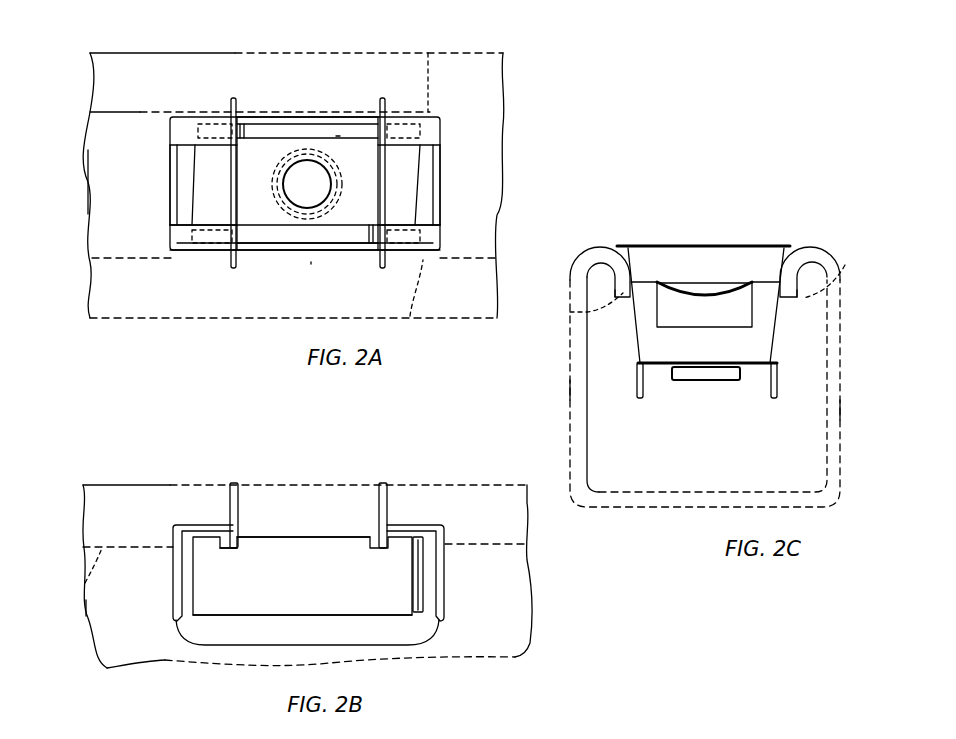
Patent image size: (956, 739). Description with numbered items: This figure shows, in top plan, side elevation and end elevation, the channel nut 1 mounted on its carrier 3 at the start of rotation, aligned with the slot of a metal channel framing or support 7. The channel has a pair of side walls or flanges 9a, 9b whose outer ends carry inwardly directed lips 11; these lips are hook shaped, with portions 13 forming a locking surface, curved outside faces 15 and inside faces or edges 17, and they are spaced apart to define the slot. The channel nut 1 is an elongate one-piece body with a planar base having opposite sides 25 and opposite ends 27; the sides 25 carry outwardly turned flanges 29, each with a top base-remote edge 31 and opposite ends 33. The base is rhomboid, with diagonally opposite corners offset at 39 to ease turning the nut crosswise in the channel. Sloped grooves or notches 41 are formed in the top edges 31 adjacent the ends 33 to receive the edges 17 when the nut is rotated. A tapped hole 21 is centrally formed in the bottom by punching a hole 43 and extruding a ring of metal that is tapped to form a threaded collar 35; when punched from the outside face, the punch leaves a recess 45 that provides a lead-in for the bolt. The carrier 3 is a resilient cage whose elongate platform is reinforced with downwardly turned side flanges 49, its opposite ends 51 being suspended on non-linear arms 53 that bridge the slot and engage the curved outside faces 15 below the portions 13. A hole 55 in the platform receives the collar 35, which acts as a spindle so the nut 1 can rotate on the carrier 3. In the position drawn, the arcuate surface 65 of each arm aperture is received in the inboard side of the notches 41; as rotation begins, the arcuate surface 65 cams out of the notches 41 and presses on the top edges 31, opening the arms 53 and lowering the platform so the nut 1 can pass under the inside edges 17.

In FIG. 2B, the channel nut 1 is at (341, 565).
In FIG. 2A, the carrier 3 is at (309, 187).
In FIG. 2C, the carrier 3 is at (658, 316).
In FIG. 2B, the carrier 3 is at (313, 627).
In FIG. 2A, the metal channel framing 7 is at (86, 182).
In FIG. 2C, the metal channel framing 7 is at (691, 338).
In FIG. 2B, the metal channel framing 7 is at (86, 618).
In FIG. 2C, the channel side wall 9a is at (570, 393).
In FIG. 2C, the channel side wall 9b is at (842, 417).
In FIG. 2A, the inwardly directed lip 11 is at (88, 80).
In FIG. 2C, the inwardly directed lip 11 is at (629, 251).
In FIG. 2B, the inwardly directed lip 11 is at (78, 529).
In FIG. 2C, the lip portion 13 is at (588, 243).
In FIG. 2C, the curved outside face 15 is at (622, 242).
In FIG. 2C, the inside edge 17 is at (570, 312).
In FIG. 2B, the inside edge 17 is at (85, 583).
In FIG. 2A, the tapped hole 21 is at (300, 208).
In FIG. 2A, the side of base 25 is at (338, 135).
In FIG. 2A, the end of base 27 is at (193, 173).
In FIG. 2B, the end of base 27 is at (187, 621).
In FIG. 2A, the flange 29 is at (256, 124).
In FIG. 2B, the flange 29 is at (313, 597).
In FIG. 2A, the top edge 31 is at (250, 130).
In FIG. 2B, the top edge 31 is at (287, 536).
In FIG. 2A, the flange end 33 is at (428, 53).
In FIG. 2B, the flange end 33 is at (192, 575).
In FIG. 2C, the threaded collar 35 is at (668, 380).
In FIG. 2A, the offset corner 39 is at (200, 132).
In FIG. 2B, the notch 41 is at (227, 540).
In FIG. 2A, the punched hole 43 is at (313, 218).
In FIG. 2A, the recess 45 is at (304, 113).
In FIG. 2B, the side flange 49 is at (323, 641).
In FIG. 2A, the carrier end 51 is at (178, 192).
In FIG. 2A, the non-linear arm 53 is at (160, 237).
In FIG. 2C, the non-linear arm 53 is at (703, 278).
In FIG. 2B, the non-linear arm 53 is at (406, 518).
In FIG. 2A, the platform hole 55 is at (311, 264).
In FIG. 2C, the arcuate surface 65 is at (683, 292).
In FIG. 2B, the arcuate surface 65 is at (244, 536).